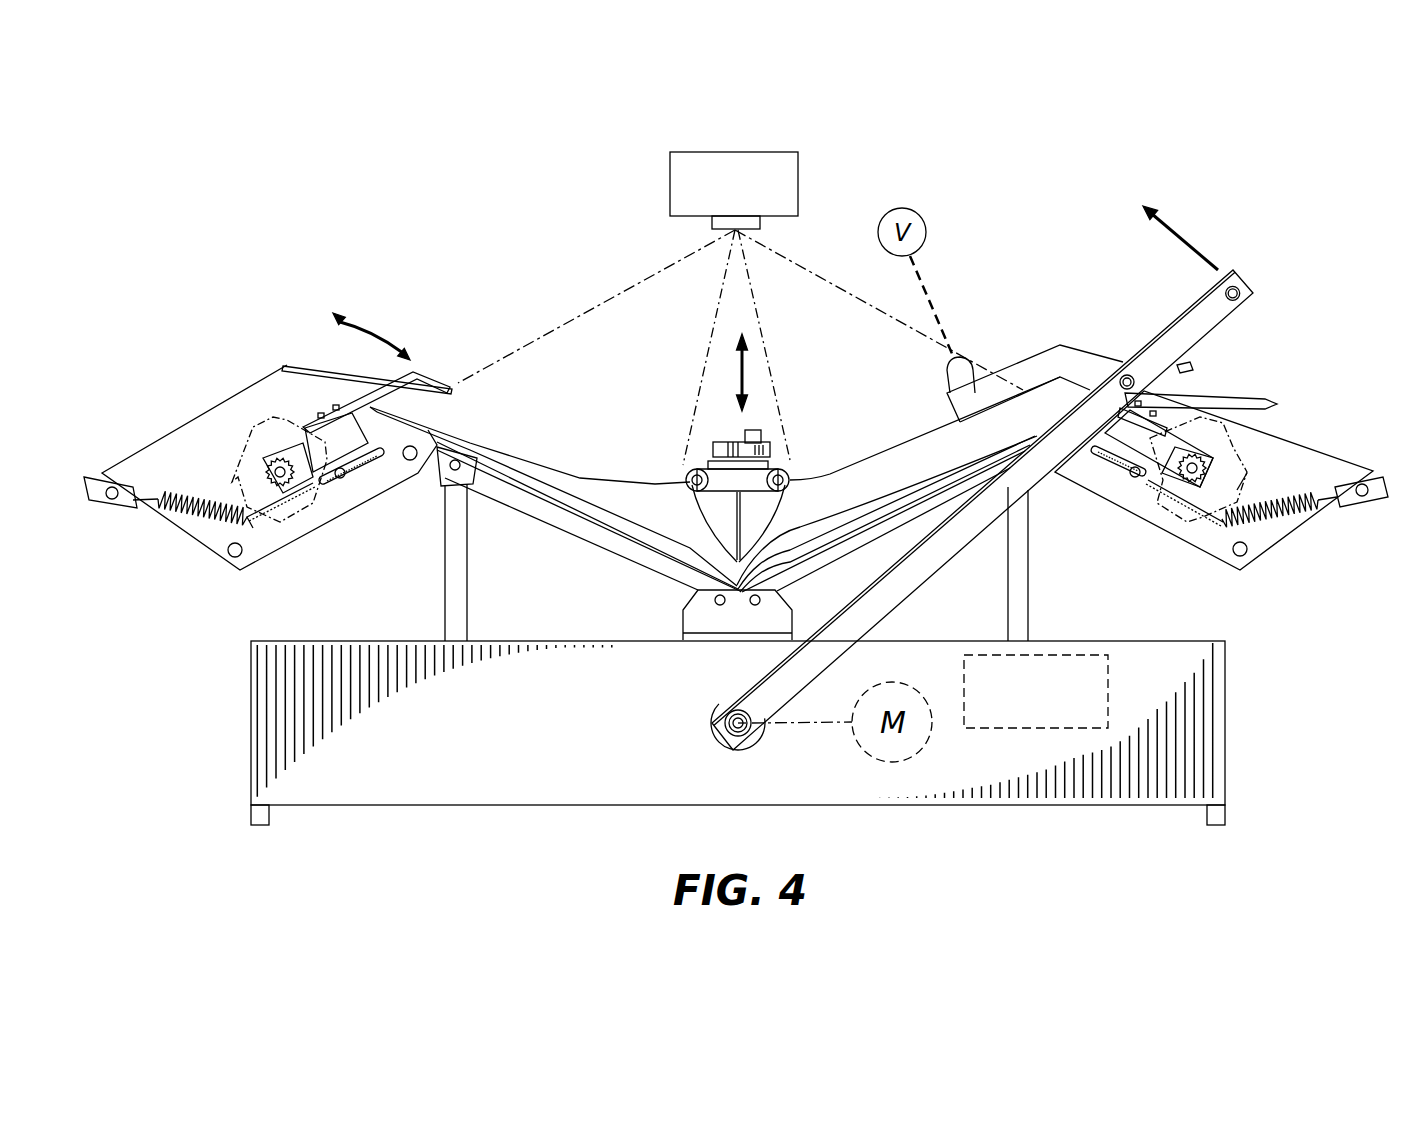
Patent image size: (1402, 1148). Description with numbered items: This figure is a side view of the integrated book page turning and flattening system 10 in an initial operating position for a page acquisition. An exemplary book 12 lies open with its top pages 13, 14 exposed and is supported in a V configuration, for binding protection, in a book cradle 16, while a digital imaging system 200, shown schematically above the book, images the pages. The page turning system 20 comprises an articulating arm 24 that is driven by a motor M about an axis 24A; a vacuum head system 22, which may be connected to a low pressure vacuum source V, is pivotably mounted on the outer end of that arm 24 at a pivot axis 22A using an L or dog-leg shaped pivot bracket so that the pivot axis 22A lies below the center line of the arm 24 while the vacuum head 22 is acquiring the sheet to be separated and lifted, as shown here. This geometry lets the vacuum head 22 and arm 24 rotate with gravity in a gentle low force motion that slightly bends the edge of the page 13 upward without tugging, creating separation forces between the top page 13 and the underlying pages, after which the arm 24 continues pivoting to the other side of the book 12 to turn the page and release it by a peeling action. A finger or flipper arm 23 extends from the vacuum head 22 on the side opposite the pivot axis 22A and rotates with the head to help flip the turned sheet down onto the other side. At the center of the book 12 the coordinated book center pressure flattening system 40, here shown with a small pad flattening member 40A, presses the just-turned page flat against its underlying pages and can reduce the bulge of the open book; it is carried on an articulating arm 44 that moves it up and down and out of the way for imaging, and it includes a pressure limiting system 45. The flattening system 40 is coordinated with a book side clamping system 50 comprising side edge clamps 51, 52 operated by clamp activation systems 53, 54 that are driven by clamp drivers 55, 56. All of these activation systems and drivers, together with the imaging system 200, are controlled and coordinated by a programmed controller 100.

The integrated book page turning and flattening system 10 is at (455, 236).
The book 12 is at (552, 468).
The opened top page 13 is at (892, 453).
The opened top page 14 is at (515, 423).
The book cradle 16 is at (610, 552).
The page turning system 20 is at (1184, 304).
The vacuum head system 22 is at (983, 413).
The pivot axis 22A is at (1128, 374).
The flipper arm 23 is at (1252, 397).
The articulating arm 24 is at (930, 558).
The axis 24A is at (745, 732).
The book center pressure flattening system 40 is at (782, 421).
The pad flattening member 40A is at (725, 475).
The articulating arm 44 is at (687, 557).
The pressure limiting system 45 is at (735, 433).
The book side clamping system 50 is at (236, 413).
The side edge clamp 51 is at (1160, 423).
The side edge clamp 52 is at (433, 377).
The clamp activation system 53 is at (1213, 460).
The clamp activation system 54 is at (287, 493).
The clamp driver 55 is at (1247, 473).
The clamp driver 56 is at (278, 422).
The programmed controller 100 is at (1068, 655).
The digital imaging system 200 is at (800, 182).